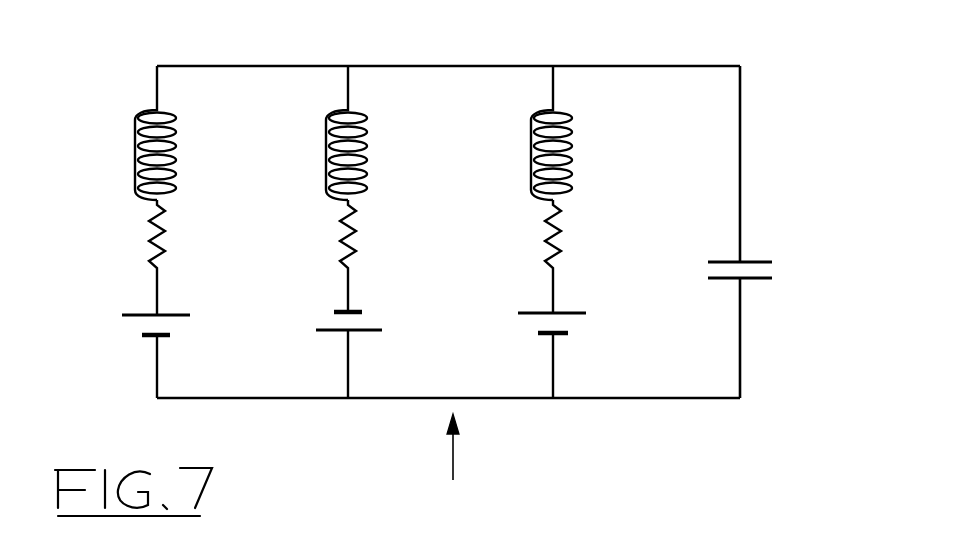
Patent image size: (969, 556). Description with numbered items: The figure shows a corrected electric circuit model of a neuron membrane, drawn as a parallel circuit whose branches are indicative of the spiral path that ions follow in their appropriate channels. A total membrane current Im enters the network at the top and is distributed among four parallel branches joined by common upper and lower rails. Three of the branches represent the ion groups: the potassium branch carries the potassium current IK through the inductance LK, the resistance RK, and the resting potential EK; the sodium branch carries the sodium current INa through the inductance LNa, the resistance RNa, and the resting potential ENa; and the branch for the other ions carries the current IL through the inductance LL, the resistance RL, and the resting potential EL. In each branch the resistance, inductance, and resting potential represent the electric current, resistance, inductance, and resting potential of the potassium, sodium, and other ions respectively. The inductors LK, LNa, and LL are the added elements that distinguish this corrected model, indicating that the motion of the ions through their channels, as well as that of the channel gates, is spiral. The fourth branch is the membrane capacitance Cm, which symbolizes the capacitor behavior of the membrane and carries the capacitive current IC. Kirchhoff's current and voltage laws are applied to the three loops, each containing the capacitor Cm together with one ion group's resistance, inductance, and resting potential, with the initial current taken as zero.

The potassium ion electric current IK is at (130, 68).
The potassium ion inductance LK is at (132, 133).
The potassium ion resistance RK is at (128, 257).
The potassium resting potential EK is at (128, 353).
The sodium ion electric current INa is at (324, 70).
The sodium ion inductance LNa is at (321, 133).
The sodium ion resistance RNa is at (315, 256).
The sodium resting potential ENa is at (315, 352).
The leakage ion electric current IL is at (530, 68).
The leakage ion inductance LL is at (532, 133).
The leakage ion resistance RL is at (525, 256).
The leakage resting potential EL is at (532, 354).
The capacitive current IC is at (760, 88).
The membrane capacitance Cm is at (770, 232).
The membrane current Im is at (455, 0).